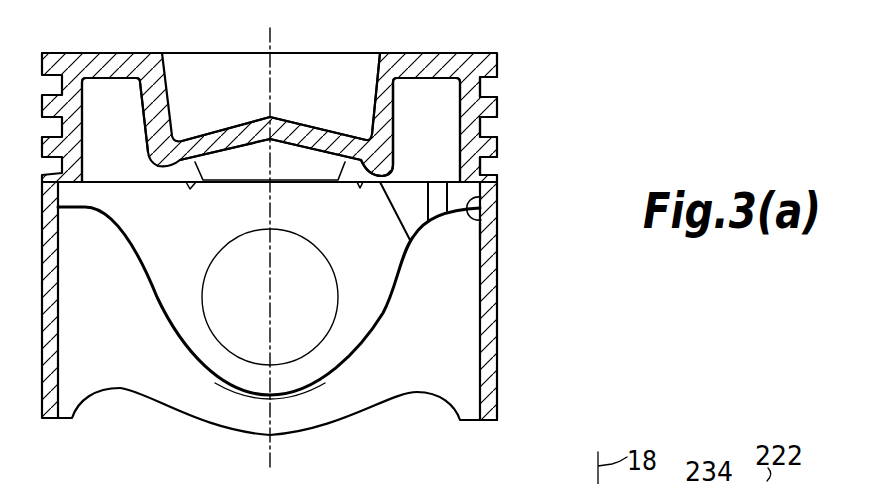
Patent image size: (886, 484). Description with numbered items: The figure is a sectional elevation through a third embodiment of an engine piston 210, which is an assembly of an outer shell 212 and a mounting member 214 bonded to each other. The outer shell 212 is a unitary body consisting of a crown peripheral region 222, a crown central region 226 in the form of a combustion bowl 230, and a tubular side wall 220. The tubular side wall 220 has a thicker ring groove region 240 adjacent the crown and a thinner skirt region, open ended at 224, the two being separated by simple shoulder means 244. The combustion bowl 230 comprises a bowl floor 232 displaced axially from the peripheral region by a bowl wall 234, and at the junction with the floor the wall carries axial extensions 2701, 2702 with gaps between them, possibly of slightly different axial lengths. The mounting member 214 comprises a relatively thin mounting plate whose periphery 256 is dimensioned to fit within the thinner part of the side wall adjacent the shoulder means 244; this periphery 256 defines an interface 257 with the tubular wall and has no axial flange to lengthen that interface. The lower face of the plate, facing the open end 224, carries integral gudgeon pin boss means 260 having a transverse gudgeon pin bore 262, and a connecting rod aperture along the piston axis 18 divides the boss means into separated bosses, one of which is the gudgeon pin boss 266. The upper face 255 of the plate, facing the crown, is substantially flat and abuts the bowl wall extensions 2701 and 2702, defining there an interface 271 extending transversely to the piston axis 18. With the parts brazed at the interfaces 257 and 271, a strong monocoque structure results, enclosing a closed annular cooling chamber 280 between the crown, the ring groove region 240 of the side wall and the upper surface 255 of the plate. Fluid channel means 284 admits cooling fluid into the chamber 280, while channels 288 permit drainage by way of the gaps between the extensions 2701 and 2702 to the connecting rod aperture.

The piston axis 18 is at (269, 35).
The piston 210 is at (547, 338).
The outer shell 212 is at (110, 410).
The mounting member 214 is at (205, 398).
The tubular side wall 220 is at (478, 302).
The crown peripheral region 222 is at (94, 53).
The open end 224 is at (438, 450).
The crown central region 226 is at (196, 45).
The combustion bowl 230 is at (237, 105).
The bowl floor 232 is at (313, 133).
The bowl wall 234 is at (375, 78).
The ring groove region 240 is at (514, 125).
The shoulder means 244 is at (510, 174).
The upper face of the plate 255 is at (118, 175).
The periphery of the plate 256 is at (483, 230).
The interface 257 is at (484, 199).
The gudgeon pin boss means 260 is at (297, 412).
The gudgeon pin bore 262 is at (327, 308).
The gudgeon pin boss 266 is at (213, 363).
The axial extension 2701 is at (390, 188).
The axial extension 2702 is at (312, 165).
The interface 271 is at (140, 172).
The closed annular cooling chamber 280 is at (432, 103).
The fluid channel means 284 is at (436, 212).
The channels 288 is at (192, 190).